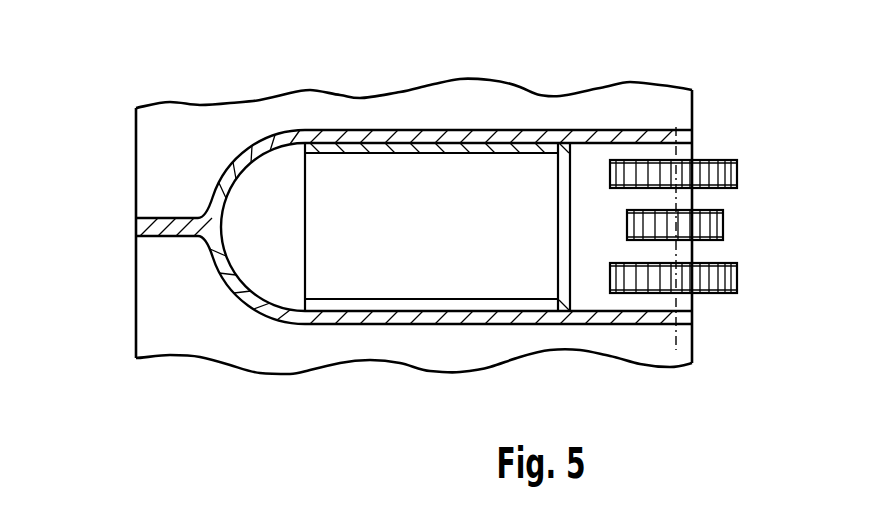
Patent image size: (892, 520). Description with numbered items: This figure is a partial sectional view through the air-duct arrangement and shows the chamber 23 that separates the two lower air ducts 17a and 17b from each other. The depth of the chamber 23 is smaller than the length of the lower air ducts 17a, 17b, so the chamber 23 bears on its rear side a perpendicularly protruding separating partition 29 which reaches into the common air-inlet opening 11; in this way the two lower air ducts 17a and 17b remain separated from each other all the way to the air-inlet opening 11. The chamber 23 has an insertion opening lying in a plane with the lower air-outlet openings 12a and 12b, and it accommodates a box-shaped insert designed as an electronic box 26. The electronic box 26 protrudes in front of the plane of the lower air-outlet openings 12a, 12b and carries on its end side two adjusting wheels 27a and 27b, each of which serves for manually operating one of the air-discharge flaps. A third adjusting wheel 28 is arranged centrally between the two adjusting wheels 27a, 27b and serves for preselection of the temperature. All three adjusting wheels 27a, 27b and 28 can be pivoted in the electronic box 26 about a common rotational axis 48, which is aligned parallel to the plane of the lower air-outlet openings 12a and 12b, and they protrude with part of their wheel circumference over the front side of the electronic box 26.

The air-inlet opening 11 is at (424, 226).
The lower air-outlet opening 12a is at (692, 95).
The lower air-outlet opening 12b is at (682, 343).
The lower air duct 17a is at (350, 347).
The lower air duct 17b is at (528, 112).
The chamber 23 is at (268, 138).
The electronic box 26 is at (424, 142).
The adjusting wheel 27a is at (738, 279).
The adjusting wheel 27b is at (725, 161).
The third adjusting wheel 28 is at (725, 223).
The separating partition 29 is at (170, 237).
The rotational axis 48 is at (680, 149).